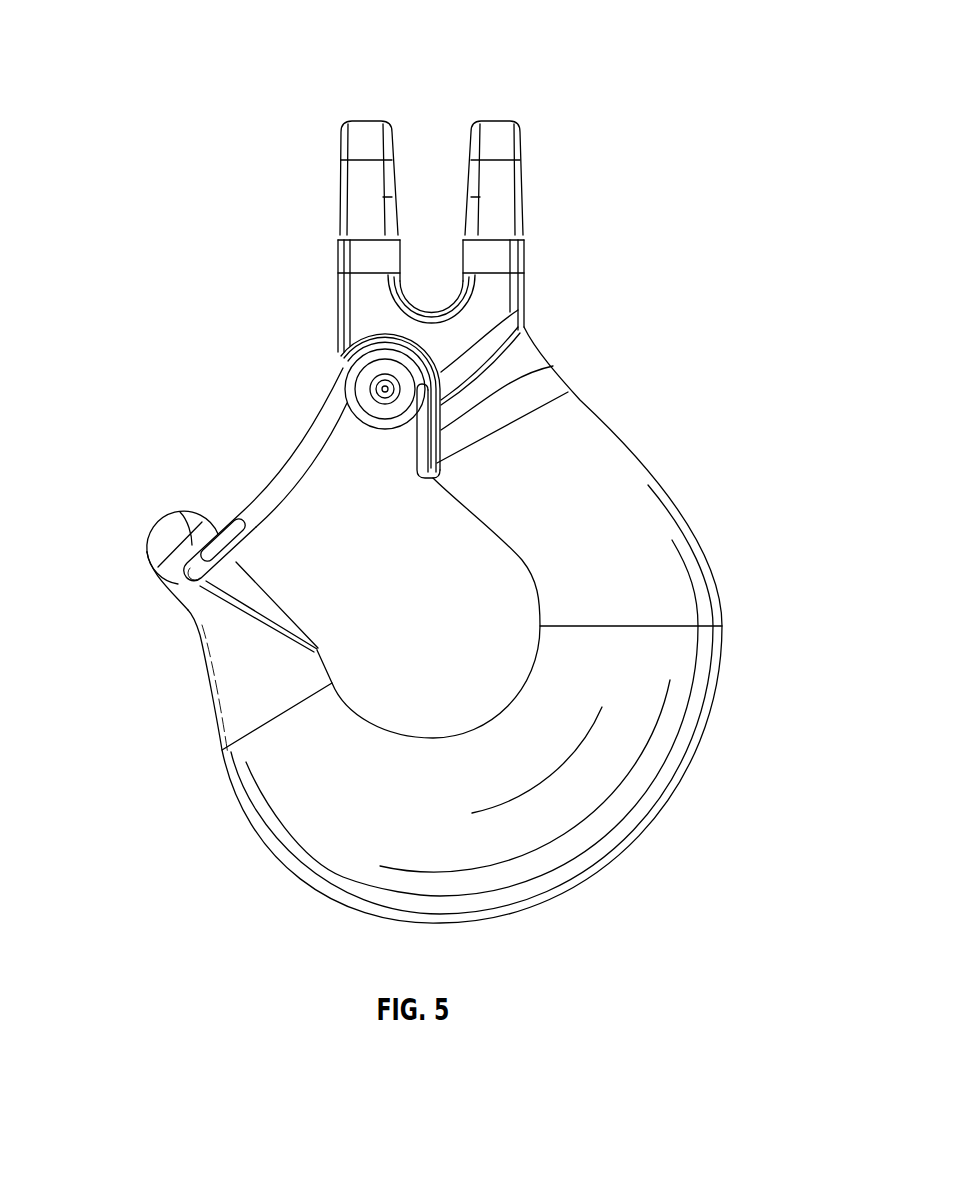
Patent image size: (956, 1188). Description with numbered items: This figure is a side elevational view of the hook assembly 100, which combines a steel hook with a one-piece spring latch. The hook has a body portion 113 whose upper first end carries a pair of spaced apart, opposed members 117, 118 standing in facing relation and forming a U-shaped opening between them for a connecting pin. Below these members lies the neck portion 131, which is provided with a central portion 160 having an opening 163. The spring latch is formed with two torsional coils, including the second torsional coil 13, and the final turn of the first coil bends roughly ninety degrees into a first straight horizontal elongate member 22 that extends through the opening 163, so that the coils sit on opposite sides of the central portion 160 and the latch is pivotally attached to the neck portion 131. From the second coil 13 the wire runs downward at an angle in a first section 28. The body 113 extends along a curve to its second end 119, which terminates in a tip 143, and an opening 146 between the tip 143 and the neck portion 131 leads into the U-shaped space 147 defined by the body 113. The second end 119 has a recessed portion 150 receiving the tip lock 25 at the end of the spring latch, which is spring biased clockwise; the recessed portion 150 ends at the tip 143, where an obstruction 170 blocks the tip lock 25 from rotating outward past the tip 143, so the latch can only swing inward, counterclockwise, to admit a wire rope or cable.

The hook assembly 100 is at (588, 78).
The body portion 113 is at (741, 697).
The opposed member 117 is at (367, 118).
The opposed member 118 is at (492, 118).
The second torsional coil 13 is at (517, 313).
The first section 28 is at (548, 358).
The neck portion 131 is at (577, 552).
The U-shaped space 147 is at (402, 636).
The opening 163 is at (384, 392).
The central portion 160 is at (367, 380).
The first straight horizontal elongate member 22 is at (385, 395).
The opening 146 is at (213, 513).
The tip lock 25 is at (203, 578).
The obstruction 170 is at (190, 543).
The second end 119 is at (122, 527).
The tip 143 is at (137, 568).
The recessed portion 150 is at (247, 590).